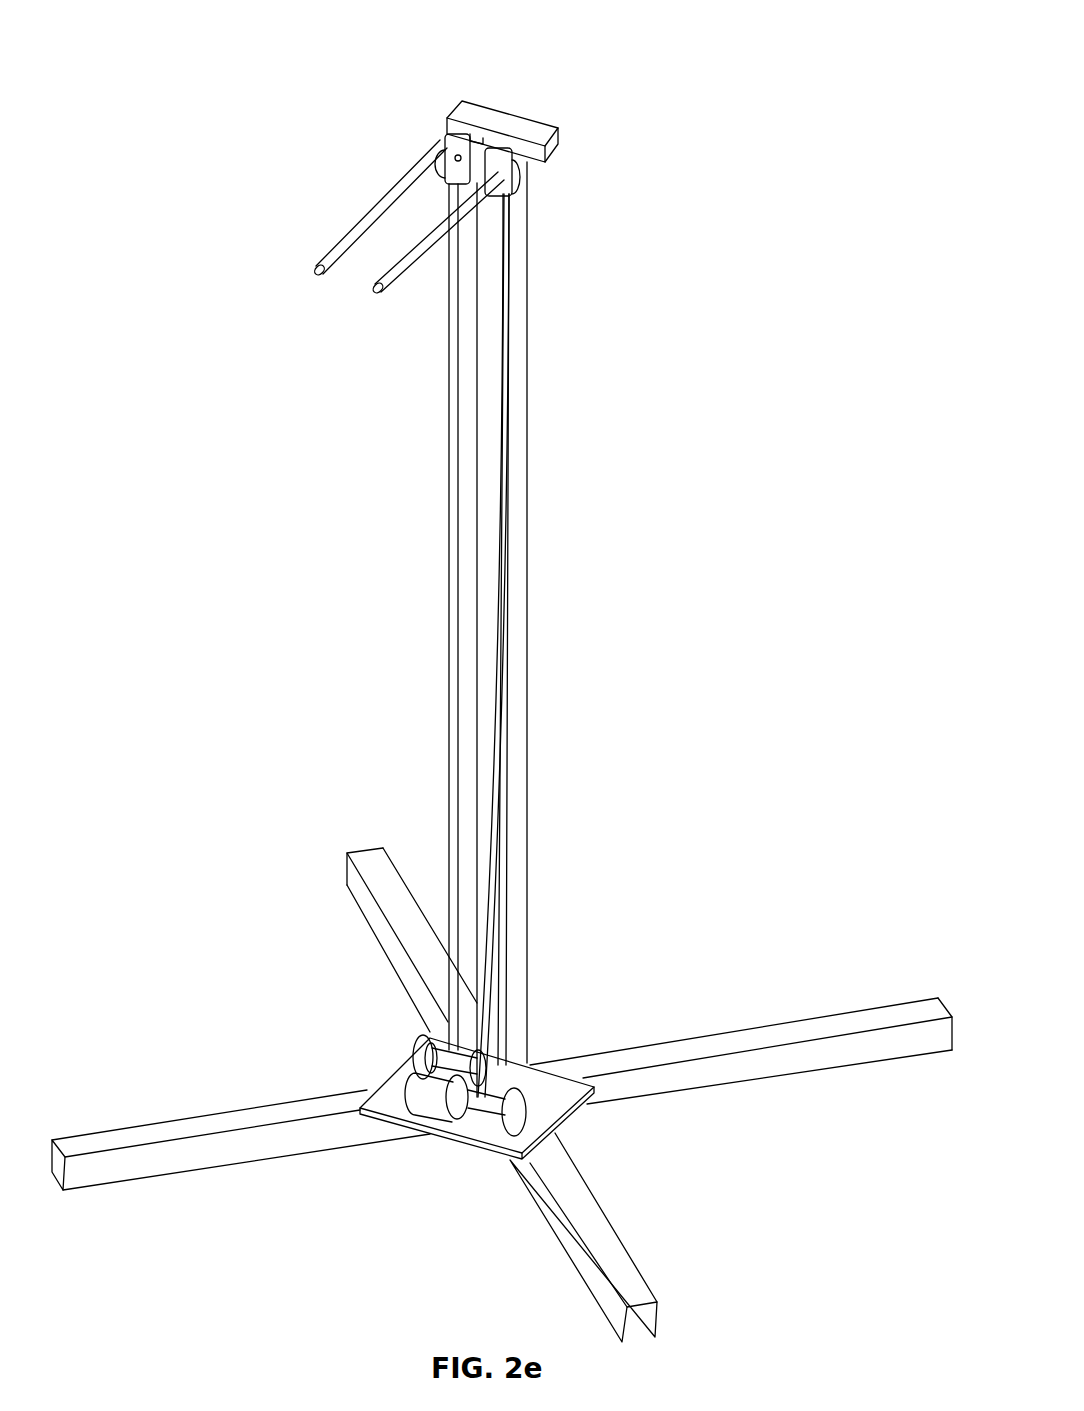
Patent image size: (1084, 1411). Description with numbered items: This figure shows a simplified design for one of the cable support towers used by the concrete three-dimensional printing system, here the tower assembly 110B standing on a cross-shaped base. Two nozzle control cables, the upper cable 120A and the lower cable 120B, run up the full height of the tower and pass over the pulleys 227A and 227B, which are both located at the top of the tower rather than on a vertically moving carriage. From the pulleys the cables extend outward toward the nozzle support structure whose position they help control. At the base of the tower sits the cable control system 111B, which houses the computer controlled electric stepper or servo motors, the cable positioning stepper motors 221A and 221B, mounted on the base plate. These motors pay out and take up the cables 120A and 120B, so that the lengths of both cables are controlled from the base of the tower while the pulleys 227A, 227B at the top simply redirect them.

The tower assembly 110B is at (511, 104).
The pulley 227A is at (426, 147).
The pulley 227B is at (512, 176).
The upper nozzle control cable 120A is at (306, 256).
The lower nozzle control cable 120B is at (364, 300).
The cable control system 111B is at (551, 1080).
The cable positioning stepper motor 221A is at (427, 1096).
The cable positioning stepper motor 221B is at (407, 1048).